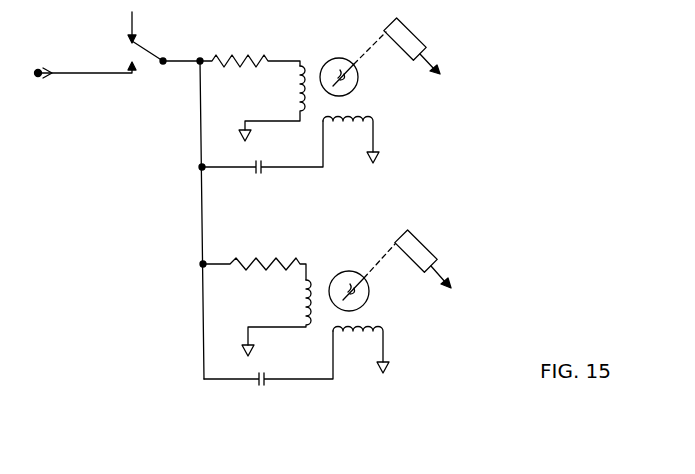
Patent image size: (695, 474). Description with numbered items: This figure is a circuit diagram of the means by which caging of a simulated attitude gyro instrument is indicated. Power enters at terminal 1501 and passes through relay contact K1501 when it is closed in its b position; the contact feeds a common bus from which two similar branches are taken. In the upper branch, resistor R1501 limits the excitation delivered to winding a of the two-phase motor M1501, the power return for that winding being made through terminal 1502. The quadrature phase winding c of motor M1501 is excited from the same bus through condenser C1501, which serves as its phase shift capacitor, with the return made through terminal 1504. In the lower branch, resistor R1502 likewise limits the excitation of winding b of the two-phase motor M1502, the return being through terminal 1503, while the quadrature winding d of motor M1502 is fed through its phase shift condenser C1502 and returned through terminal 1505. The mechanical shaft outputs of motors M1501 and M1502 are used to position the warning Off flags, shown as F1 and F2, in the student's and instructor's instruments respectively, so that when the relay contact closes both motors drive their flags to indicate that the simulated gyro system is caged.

The terminal 1501 is at (34, 66).
The relay contact K1501 is at (148, 49).
The resistor R1501 is at (220, 40).
The 2-phase motor M1501 is at (320, 58).
The terminal 1502 is at (272, 107).
The terminal 1504 is at (366, 166).
The condenser C1501 is at (252, 173).
The resistor R1502 is at (242, 240).
The 2-phase motor M1502 is at (328, 271).
The terminal 1503 is at (244, 348).
The terminal 1505 is at (398, 350).
The condenser C1502 is at (255, 386).
The OFF flag indicator F1 is at (419, 32).
The OFF flag indicator F2 is at (431, 245).